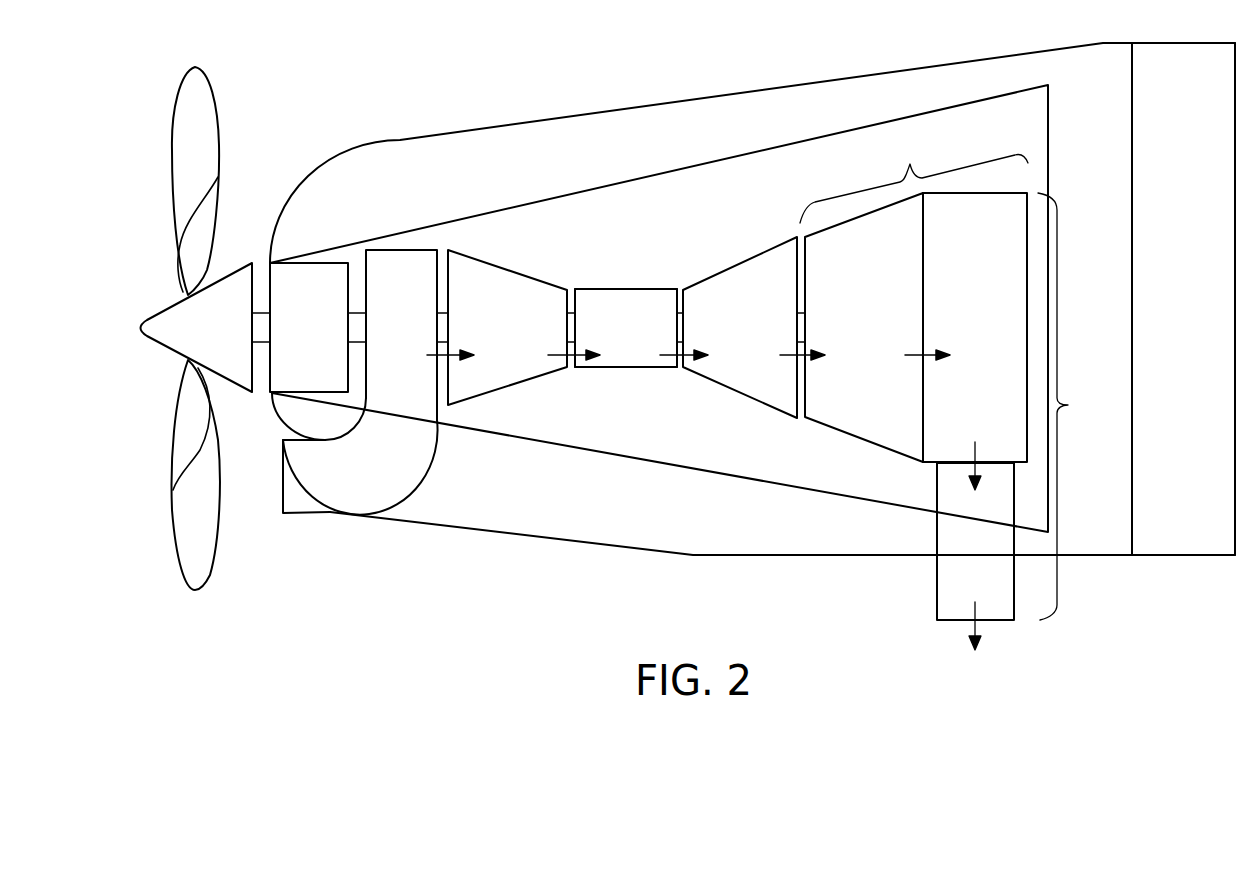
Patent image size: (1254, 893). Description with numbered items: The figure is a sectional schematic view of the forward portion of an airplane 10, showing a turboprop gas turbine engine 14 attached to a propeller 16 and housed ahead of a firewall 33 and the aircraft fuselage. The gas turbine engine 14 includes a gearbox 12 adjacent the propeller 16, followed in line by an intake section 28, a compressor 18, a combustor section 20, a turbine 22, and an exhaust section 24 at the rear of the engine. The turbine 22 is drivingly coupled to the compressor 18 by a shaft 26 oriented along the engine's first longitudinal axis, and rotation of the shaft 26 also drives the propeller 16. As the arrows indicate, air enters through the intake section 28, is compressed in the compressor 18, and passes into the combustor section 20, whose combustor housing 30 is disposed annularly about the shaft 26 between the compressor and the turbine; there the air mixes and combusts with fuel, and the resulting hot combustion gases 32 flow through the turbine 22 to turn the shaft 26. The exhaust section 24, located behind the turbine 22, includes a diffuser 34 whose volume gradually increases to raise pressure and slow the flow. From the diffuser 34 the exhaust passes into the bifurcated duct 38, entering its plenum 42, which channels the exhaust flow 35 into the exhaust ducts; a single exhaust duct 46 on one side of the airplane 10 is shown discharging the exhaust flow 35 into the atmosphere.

The airplane 10 is at (795, 83).
The gearbox 12 is at (309, 327).
The turboprop gas turbine engine 14 is at (604, 186).
The propeller 16 is at (218, 110).
The compressor 18 is at (511, 327).
The combustor section 20 is at (629, 328).
The turbine 22 is at (744, 327).
The exhaust section 24 is at (914, 178).
The shaft 26 is at (357, 312).
The intake section 28 is at (407, 335).
The combustor housing 30 is at (642, 289).
The hot combustion gases 32 is at (670, 367).
The firewall 33 is at (1130, 190).
The diffuser 34 is at (864, 327).
The exhaust flow 35 is at (975, 452).
The bifurcated duct 38 is at (1074, 406).
The plenum 42 is at (975, 327).
The second exhaust duct 46 is at (937, 576).